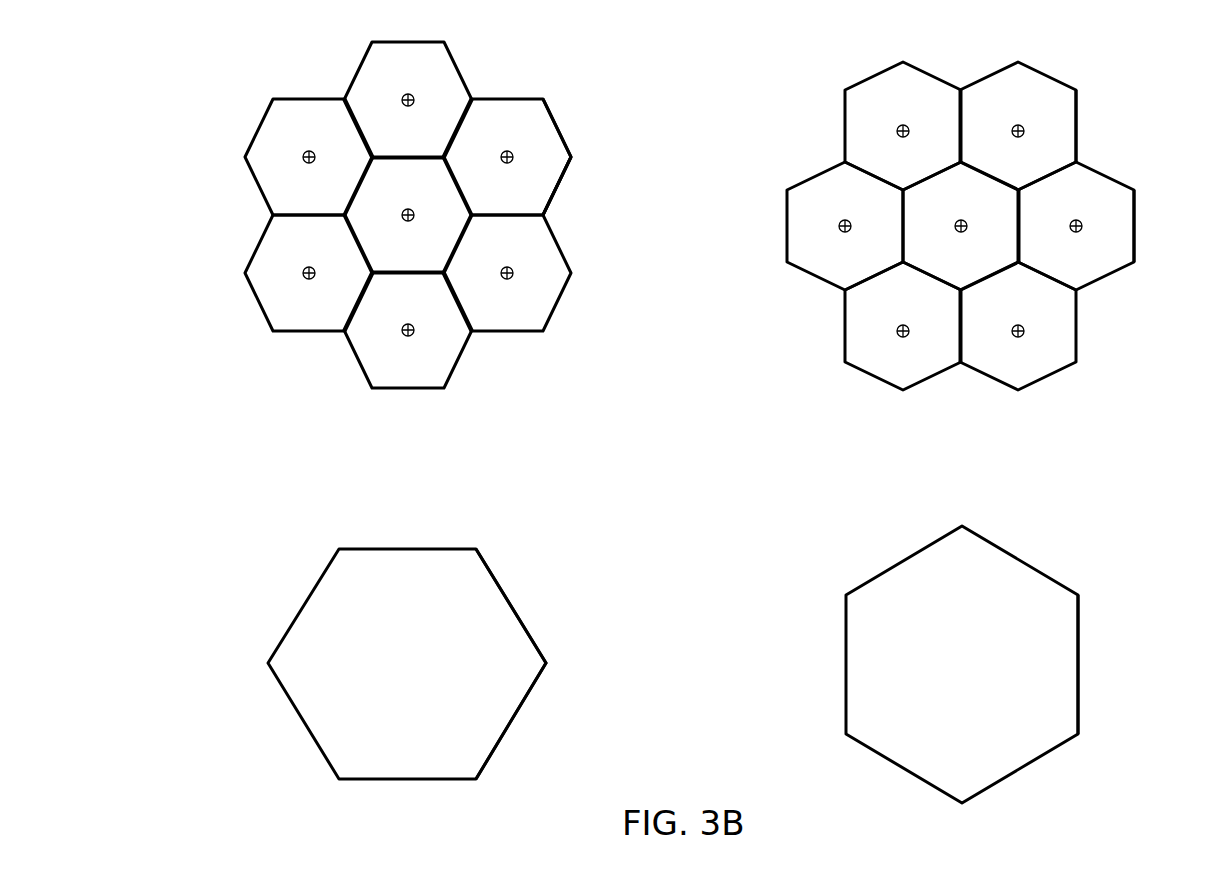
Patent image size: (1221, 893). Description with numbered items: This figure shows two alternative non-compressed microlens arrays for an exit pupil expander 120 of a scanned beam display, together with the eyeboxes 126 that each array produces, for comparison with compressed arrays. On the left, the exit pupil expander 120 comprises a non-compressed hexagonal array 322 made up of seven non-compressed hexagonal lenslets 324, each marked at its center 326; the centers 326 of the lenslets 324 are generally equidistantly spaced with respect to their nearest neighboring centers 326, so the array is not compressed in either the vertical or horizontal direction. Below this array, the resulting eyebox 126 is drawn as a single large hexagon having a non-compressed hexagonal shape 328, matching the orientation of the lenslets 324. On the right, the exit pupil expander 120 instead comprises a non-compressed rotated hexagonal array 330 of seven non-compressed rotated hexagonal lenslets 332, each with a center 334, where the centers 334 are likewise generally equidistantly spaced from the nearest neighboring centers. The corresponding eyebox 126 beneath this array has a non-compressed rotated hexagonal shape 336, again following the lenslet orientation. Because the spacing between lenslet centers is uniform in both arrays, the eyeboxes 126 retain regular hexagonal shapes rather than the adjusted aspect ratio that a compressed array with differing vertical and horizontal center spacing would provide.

The exit pupil expander 120 is at (546, 66).
The non-compressed hexagonal array 322 is at (571, 157).
The non-compressed hexagonal lenslets 324 is at (561, 178).
The centers 326 is at (415, 98).
The non-compressed rotated hexagonal array 330 is at (1077, 145).
The non-compressed rotated hexagonal lenslets 332 is at (1134, 203).
The centers 334 is at (903, 125).
The eyebox 126 is at (497, 583).
The non-compressed hexagonal shape 328 is at (546, 663).
The non-compressed rotated hexagonal shape 336 is at (1078, 617).